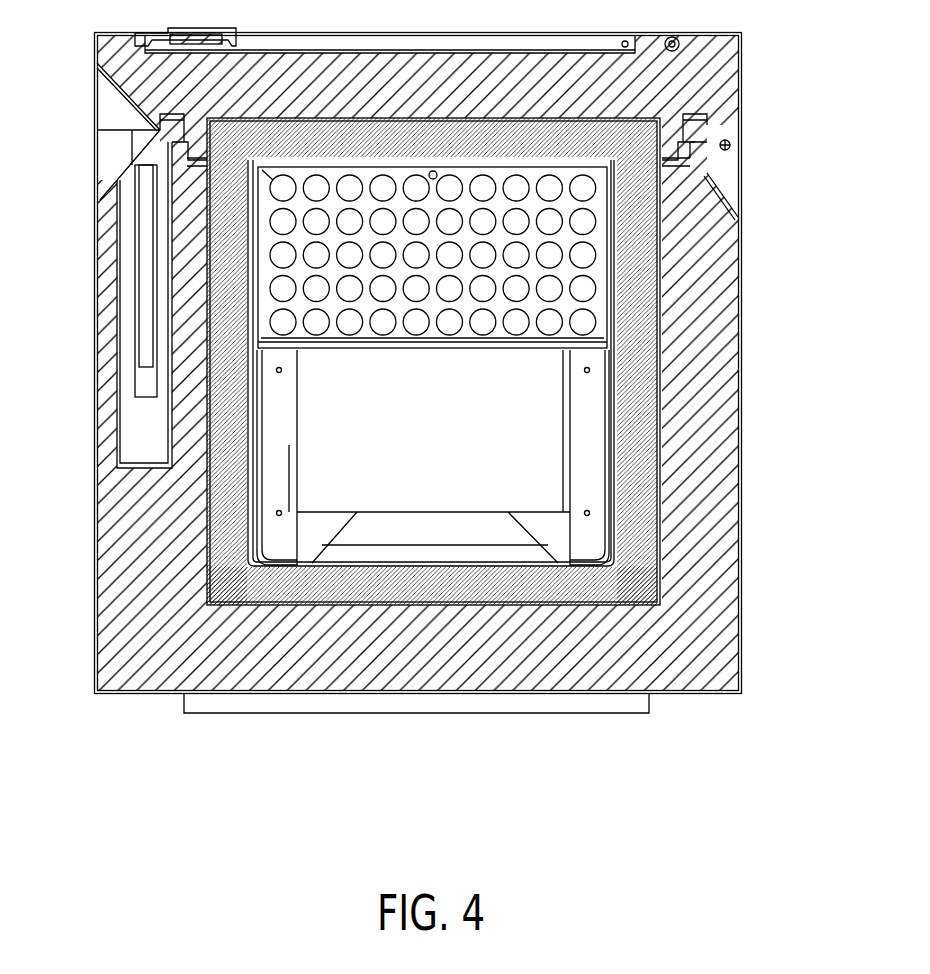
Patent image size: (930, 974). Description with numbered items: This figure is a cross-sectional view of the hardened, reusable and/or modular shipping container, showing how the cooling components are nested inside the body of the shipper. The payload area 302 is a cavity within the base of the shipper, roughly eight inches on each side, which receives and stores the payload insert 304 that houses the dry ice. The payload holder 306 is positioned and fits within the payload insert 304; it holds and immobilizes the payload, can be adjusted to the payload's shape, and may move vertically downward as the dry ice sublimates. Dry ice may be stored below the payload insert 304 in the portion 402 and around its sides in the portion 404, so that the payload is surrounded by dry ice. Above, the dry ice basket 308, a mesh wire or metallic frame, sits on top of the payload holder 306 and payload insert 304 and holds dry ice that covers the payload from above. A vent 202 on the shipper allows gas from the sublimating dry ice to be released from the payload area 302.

The vent 202 is at (722, 146).
The dry ice basket 308 is at (583, 255).
The portion 404 is at (623, 427).
The payload holder 306 is at (308, 492).
The payload insert 304 is at (580, 533).
The payload area 302 is at (405, 555).
The portion 402 is at (470, 545).